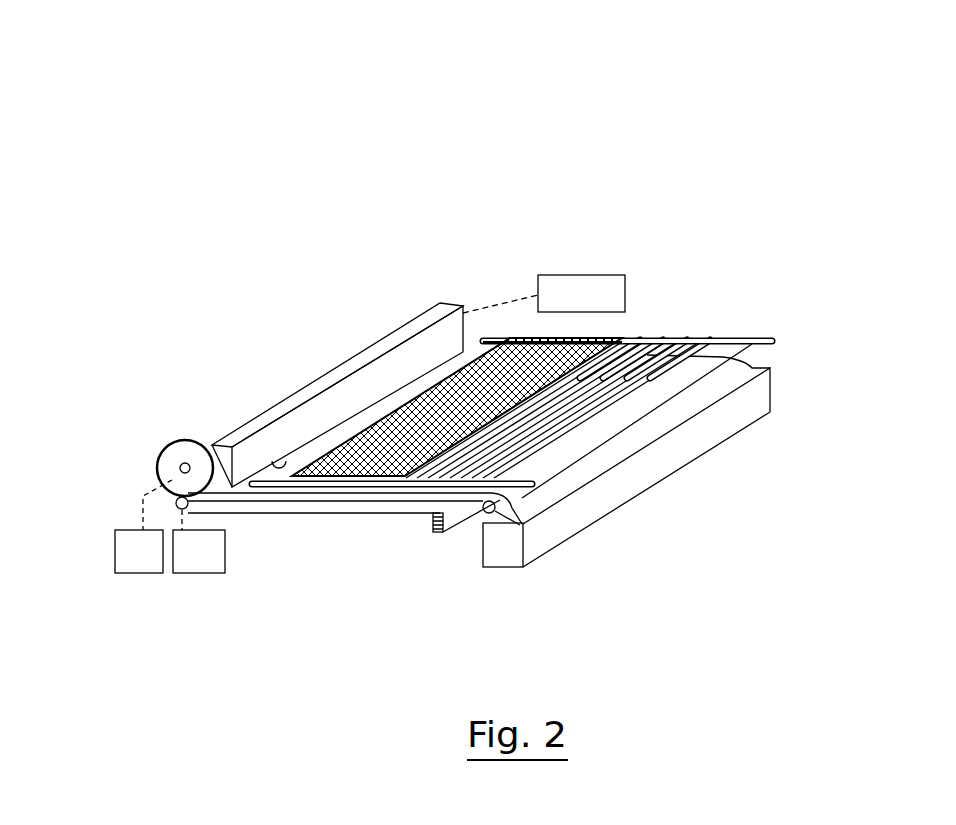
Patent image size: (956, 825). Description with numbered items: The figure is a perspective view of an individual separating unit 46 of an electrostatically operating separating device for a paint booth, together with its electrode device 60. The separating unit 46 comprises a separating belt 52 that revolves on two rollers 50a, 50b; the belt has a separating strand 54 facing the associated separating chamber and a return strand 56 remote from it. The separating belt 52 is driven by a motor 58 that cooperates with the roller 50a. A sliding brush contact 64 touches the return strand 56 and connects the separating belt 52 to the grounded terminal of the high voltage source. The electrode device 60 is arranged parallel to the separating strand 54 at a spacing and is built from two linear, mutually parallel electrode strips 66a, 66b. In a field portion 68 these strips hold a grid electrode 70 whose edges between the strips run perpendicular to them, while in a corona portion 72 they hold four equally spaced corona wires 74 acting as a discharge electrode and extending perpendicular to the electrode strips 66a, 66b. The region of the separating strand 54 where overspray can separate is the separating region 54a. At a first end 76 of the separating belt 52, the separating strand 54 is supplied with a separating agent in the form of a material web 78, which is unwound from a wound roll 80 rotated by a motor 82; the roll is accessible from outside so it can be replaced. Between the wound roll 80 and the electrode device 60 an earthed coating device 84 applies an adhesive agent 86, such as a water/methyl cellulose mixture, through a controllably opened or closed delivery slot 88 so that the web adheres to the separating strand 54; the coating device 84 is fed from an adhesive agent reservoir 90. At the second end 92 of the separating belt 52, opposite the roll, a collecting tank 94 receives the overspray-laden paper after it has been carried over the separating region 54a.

The separating unit 46 is at (446, 343).
The roller 50a is at (170, 493).
The roller 50b is at (490, 513).
The separating belt 52 is at (281, 549).
The separating strand 54 is at (355, 550).
The separating region 54a is at (320, 498).
The return strand 56 is at (400, 513).
The motor 58 is at (215, 563).
The electrode device 60 is at (552, 358).
The sliding brush contact 64 is at (430, 533).
The electrode strip 66a is at (524, 476).
The electrode strip 66b is at (733, 338).
The field portion 68 is at (522, 318).
The grid electrode 70 is at (464, 313).
The corona portion 72 is at (625, 415).
The corona wires 74 is at (813, 428).
The first end 76 is at (175, 525).
The material web 78 is at (592, 445).
The wound roll 80 is at (226, 420).
The motor 82 is at (127, 557).
The coating device 84 is at (320, 367).
The adhesive agent 86 is at (302, 417).
The delivery slot 88 is at (280, 458).
The adhesive agent reservoir 90 is at (580, 297).
The second end 92 is at (501, 522).
The collecting tank 94 is at (563, 530).